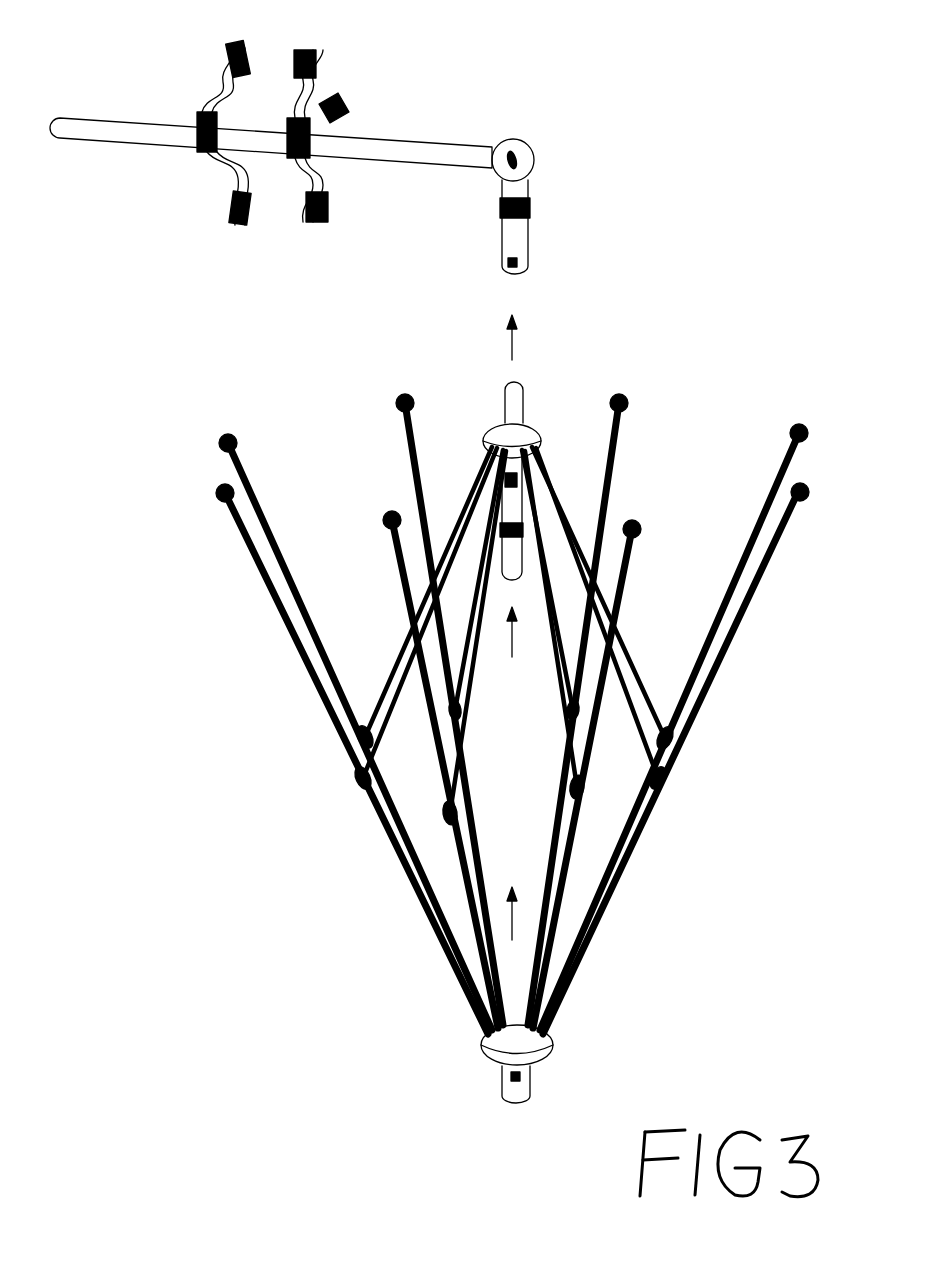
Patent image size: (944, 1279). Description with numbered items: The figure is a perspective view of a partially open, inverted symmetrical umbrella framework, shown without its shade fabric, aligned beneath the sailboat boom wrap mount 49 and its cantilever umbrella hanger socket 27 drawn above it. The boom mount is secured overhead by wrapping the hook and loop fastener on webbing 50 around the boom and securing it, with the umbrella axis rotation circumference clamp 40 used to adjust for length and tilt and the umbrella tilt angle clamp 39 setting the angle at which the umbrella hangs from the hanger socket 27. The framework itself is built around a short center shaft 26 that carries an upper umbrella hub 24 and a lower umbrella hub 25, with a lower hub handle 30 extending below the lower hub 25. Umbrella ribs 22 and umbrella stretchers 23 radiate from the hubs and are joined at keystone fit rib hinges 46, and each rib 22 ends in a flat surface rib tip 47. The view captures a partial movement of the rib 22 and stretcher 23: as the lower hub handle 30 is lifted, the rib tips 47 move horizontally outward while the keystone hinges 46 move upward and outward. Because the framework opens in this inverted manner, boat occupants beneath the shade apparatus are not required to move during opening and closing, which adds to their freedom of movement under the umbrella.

The umbrella rib 22 is at (742, 665).
The umbrella stretcher 23 is at (648, 659).
The upper umbrella hub 24 is at (551, 398).
The lower umbrella hub 25 is at (573, 1046).
The short center shaft 26 is at (471, 456).
The umbrella hanger socket 27 is at (547, 241).
The lower hub handle 30 is at (483, 1096).
The umbrella tilt angle clamp 39 is at (561, 134).
The umbrella axis rotation circumference clamp 40 is at (183, 161).
The keystone fit rib hinge 46 is at (333, 786).
The flat surface rib tip 47 is at (261, 434).
The sailboat boom wrap mount 49 is at (339, 106).
The hook and loop fastener on webbing 50 is at (208, 58).